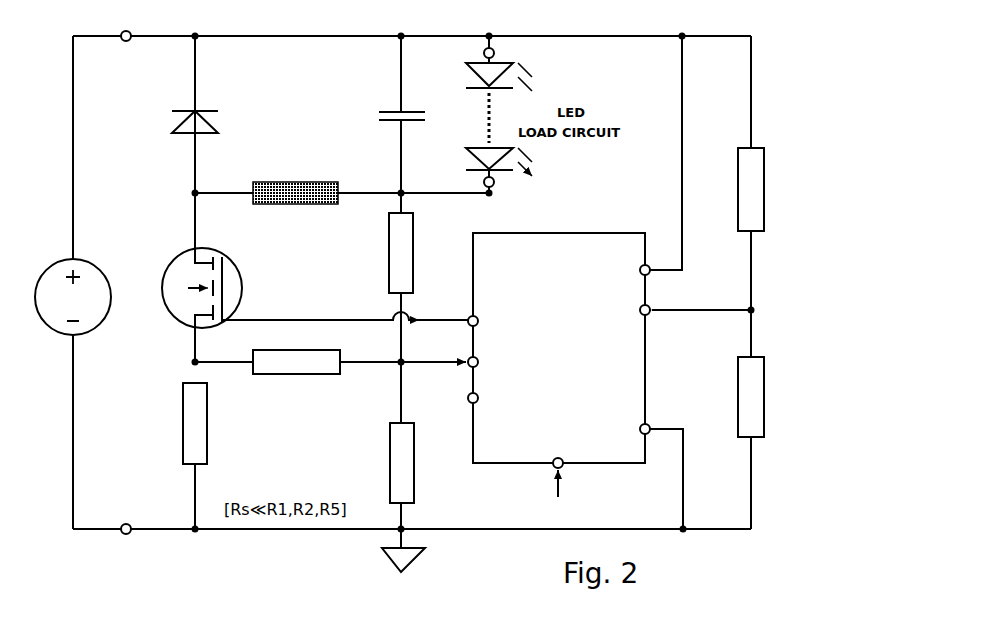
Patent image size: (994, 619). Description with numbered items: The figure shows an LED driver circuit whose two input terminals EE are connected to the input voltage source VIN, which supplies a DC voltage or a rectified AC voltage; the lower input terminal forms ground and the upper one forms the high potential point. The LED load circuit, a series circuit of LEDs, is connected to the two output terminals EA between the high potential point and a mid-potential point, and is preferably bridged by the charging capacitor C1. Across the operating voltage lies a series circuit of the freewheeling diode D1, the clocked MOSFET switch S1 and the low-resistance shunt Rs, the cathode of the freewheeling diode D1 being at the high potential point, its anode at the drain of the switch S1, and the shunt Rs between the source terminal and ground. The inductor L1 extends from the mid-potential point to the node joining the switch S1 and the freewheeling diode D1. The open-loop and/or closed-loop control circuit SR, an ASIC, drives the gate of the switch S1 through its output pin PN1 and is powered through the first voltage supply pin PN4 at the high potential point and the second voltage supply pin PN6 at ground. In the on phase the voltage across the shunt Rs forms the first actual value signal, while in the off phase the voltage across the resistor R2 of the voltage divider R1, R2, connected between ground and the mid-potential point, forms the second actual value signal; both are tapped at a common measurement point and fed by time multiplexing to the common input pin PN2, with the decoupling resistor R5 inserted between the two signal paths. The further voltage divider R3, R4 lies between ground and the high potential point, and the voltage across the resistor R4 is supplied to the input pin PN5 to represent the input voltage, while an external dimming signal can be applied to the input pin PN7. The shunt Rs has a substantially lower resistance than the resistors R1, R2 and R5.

The input terminals EE is at (125, 282).
The input voltage source VIN is at (74, 291).
The freewheeling diode D1 is at (183, 114).
The inductor L1 is at (342, 183).
The charging capacitor C1 is at (389, 114).
The output terminals EA is at (499, 114).
The clocked switch S1 is at (215, 277).
The resistor R1 is at (388, 361).
The resistor R2 is at (389, 463).
The measuring resistor (shunt) Rs is at (206, 456).
The decoupling resistor R5 is at (298, 374).
The open-loop and/or closed-loop control circuit SR is at (556, 338).
The output pin PN1 is at (350, 314).
The input pin PN2 is at (439, 352).
The first voltage supply pin PN4 is at (663, 166).
The input pin PN5 is at (695, 322).
The second voltage supply pin PN6 is at (662, 468).
The input pin PN7 is at (565, 487).
The resistor R3 is at (738, 173).
The resistor R4 is at (738, 419).